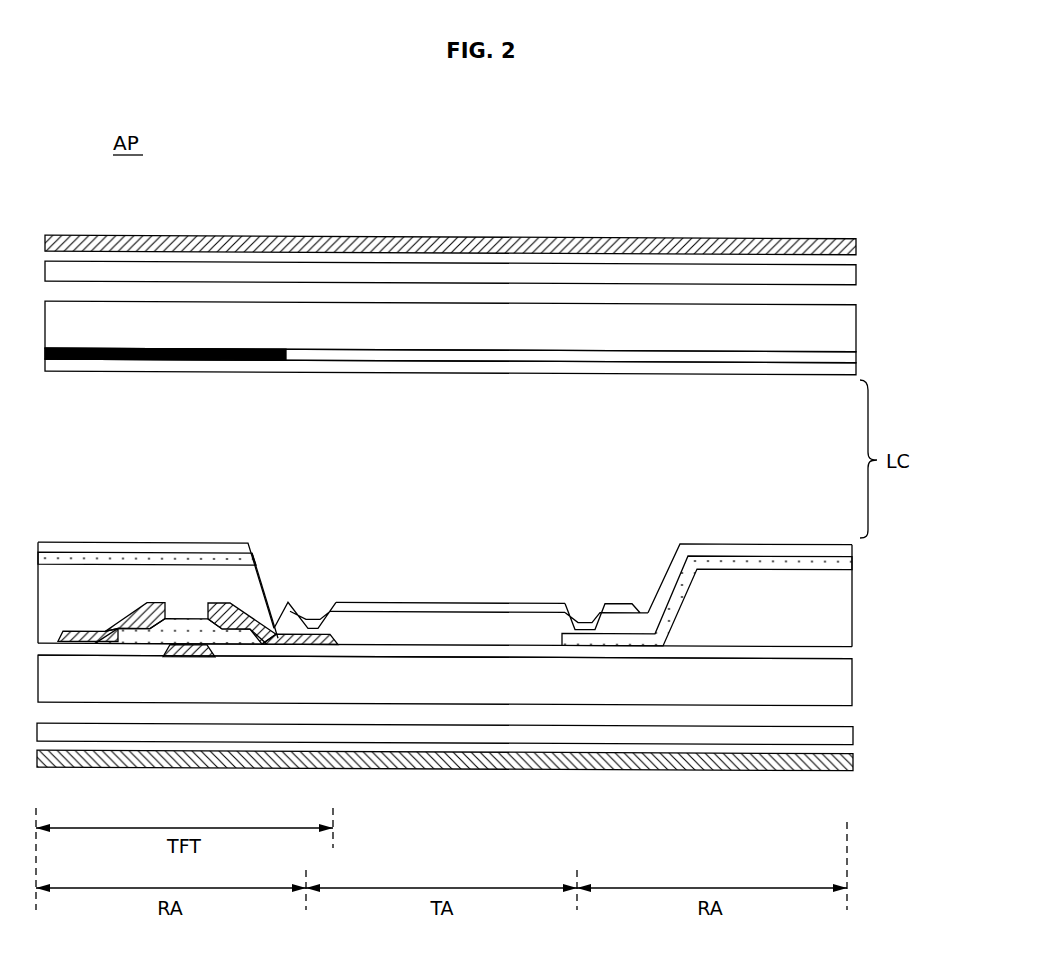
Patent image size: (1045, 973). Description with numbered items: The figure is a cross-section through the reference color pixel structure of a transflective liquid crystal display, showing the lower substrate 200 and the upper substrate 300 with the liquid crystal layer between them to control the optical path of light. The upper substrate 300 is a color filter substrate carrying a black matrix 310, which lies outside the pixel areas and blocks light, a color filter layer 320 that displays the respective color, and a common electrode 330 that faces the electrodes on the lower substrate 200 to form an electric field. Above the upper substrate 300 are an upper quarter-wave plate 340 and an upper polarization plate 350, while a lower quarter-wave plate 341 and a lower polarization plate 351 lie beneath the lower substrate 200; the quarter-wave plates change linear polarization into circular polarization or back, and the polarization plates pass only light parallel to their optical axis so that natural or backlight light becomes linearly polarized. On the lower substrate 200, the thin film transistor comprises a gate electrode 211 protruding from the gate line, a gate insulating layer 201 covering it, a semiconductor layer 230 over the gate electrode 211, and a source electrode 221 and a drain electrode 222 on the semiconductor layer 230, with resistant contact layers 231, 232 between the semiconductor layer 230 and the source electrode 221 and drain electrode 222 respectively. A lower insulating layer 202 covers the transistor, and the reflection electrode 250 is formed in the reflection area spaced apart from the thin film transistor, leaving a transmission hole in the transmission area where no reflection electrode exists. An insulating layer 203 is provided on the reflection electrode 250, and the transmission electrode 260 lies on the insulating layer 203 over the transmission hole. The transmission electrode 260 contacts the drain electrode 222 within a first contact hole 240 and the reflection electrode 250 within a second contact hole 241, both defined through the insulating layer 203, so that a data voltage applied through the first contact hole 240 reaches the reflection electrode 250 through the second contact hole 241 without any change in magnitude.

The lower substrate 200 is at (852, 685).
The gate insulating layer 201 is at (852, 650).
The lower insulating layer 202 is at (852, 608).
The insulating layer 203 is at (528, 618).
The gate electrode 211 is at (187, 645).
The source electrode 221 is at (100, 636).
The drain electrode 222 is at (279, 630).
The semiconductor layer 230 is at (177, 623).
The resistant contact layer 231 is at (140, 602).
The resistant contact layer 232 is at (243, 622).
The first contact hole 240 is at (318, 602).
The second contact hole 241 is at (590, 612).
The reflection electrode 250 is at (57, 556).
The transmission electrode 260 is at (455, 606).
The upper substrate 300 is at (848, 329).
The black matrix 310 is at (107, 360).
The color filter layer 320 is at (856, 355).
The common electrode 330 is at (856, 371).
The upper quarter-wave plate 340 is at (856, 272).
The lower quarter-wave plate 341 is at (853, 735).
The upper polarization plate 350 is at (856, 243).
The lower polarization plate 351 is at (853, 762).